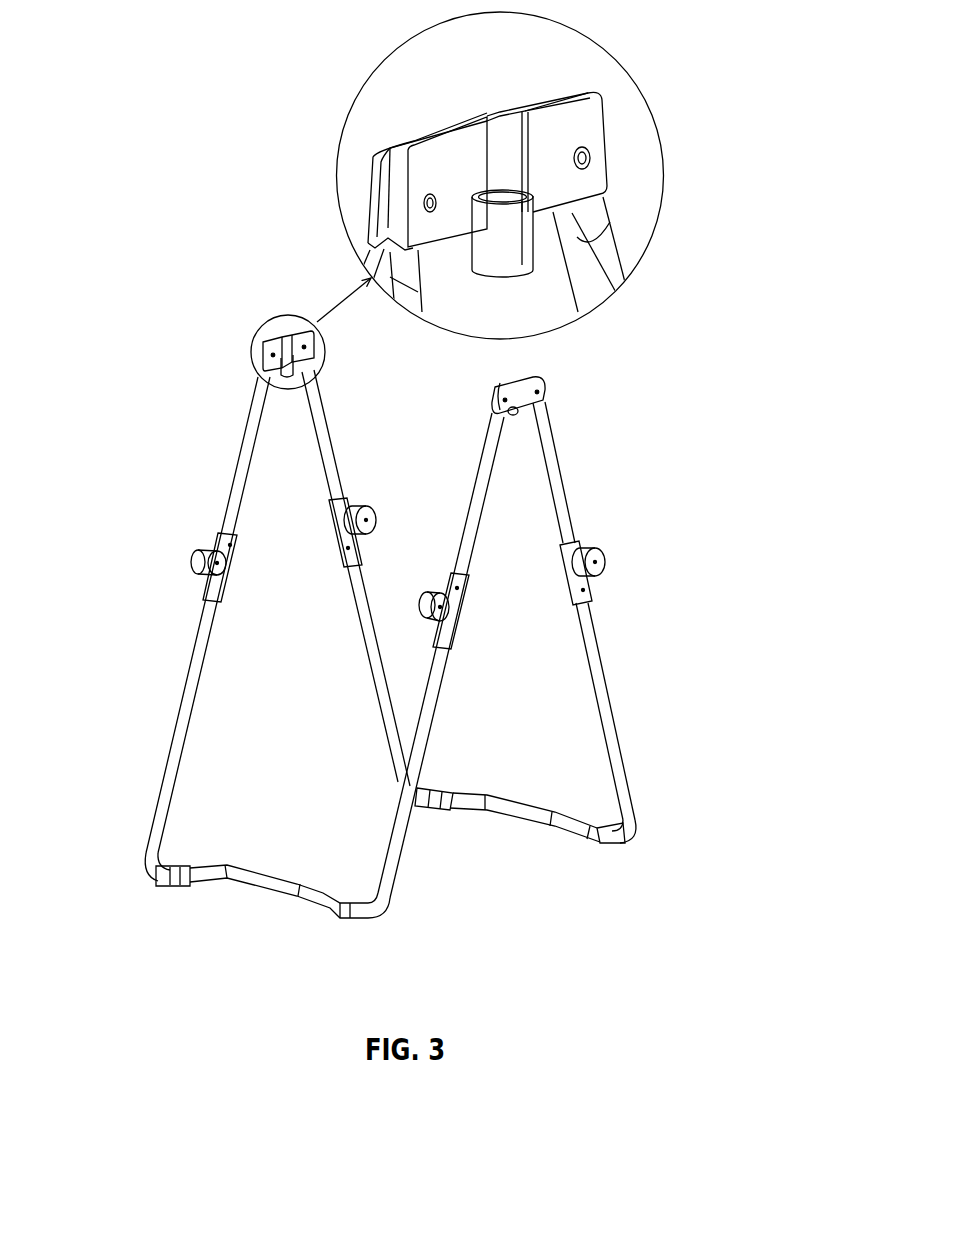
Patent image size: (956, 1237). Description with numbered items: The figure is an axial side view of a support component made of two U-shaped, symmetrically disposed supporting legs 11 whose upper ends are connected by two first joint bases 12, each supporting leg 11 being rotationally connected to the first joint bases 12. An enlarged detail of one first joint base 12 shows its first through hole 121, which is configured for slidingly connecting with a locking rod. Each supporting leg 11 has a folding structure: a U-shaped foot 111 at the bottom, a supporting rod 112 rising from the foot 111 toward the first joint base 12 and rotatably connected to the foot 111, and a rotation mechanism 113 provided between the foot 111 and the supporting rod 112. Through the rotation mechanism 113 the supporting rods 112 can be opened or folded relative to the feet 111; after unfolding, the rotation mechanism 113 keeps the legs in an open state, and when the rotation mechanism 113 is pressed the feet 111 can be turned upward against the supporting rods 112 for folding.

The supporting leg 11 is at (227, 483).
The first joint base 12 is at (263, 352).
The first through hole 121 is at (487, 198).
The foot 111 is at (607, 687).
The supporting rod 112 is at (560, 488).
The rotation mechanism 113 is at (606, 567).